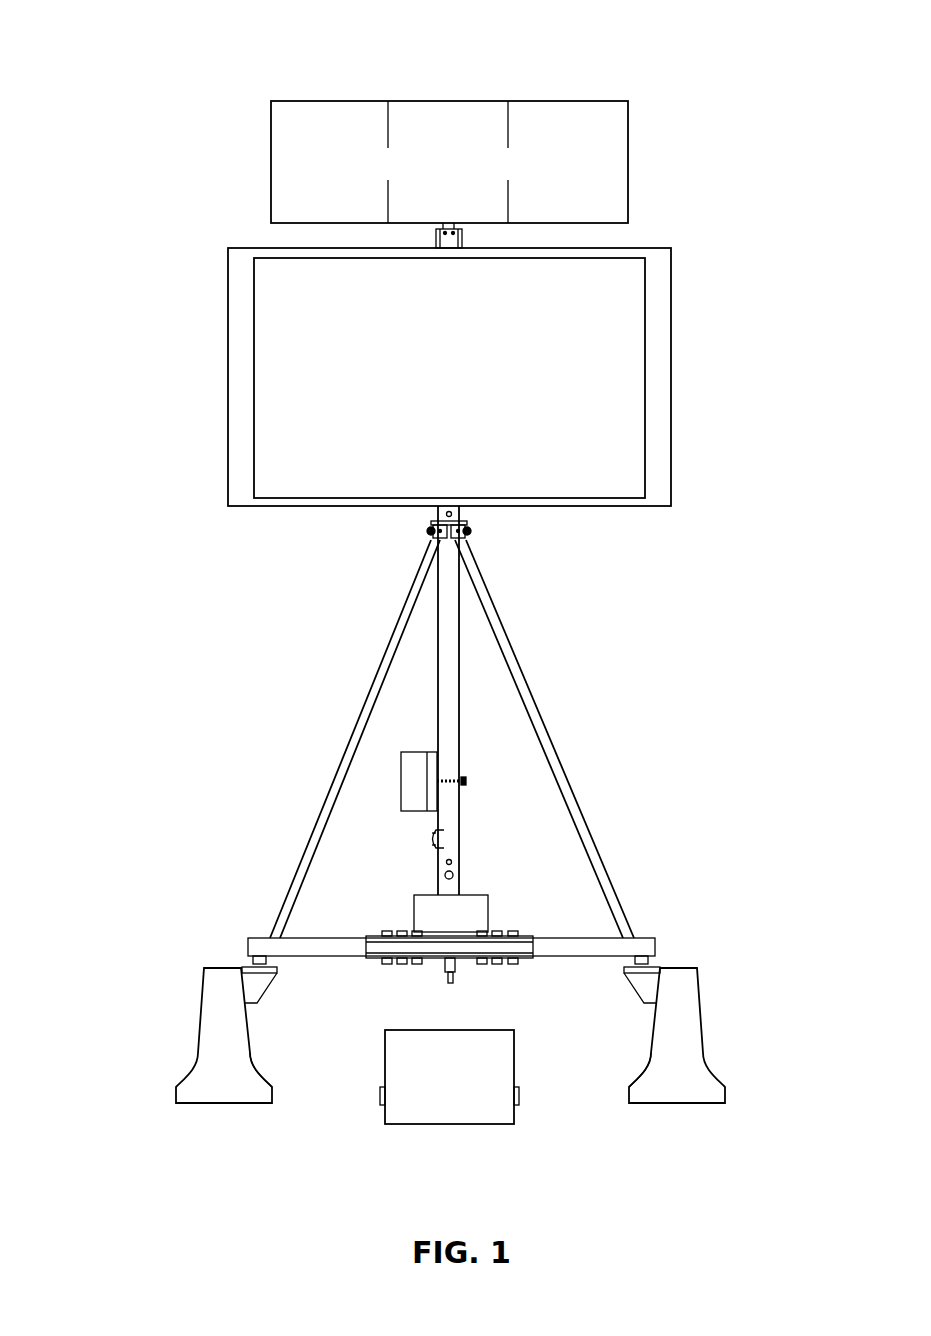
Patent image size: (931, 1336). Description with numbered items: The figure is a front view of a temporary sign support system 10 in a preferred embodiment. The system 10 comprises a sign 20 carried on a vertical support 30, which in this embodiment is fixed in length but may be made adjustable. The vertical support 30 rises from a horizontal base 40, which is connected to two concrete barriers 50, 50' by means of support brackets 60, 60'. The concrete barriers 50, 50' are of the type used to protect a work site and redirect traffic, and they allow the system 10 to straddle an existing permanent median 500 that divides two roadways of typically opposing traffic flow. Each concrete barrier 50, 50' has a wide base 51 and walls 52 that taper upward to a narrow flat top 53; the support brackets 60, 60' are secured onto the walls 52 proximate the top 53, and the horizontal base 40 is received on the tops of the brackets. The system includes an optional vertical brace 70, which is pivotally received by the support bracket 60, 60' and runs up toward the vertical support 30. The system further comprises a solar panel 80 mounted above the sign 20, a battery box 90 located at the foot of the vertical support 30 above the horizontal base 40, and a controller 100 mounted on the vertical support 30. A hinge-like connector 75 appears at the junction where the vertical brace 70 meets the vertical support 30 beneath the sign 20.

The temporary sign support system 10 is at (155, 281).
The sign 20 is at (671, 353).
The vertical support 30 is at (460, 695).
The horizontal base 40 is at (535, 937).
The concrete barrier 50 is at (202, 1035).
The concrete barrier 50' is at (706, 1035).
The wide base 51 is at (218, 1104).
The walls 52 is at (255, 1067).
The narrow flat top 53 is at (228, 967).
The support bracket 60 is at (294, 990).
The support bracket 60' is at (604, 989).
The vertical brace 70 is at (363, 707).
The hinge 75 is at (470, 528).
The solar panel 80 is at (439, 101).
The battery box 90 is at (428, 918).
The controller 100 is at (401, 787).
The permanent median 500 is at (450, 1124).